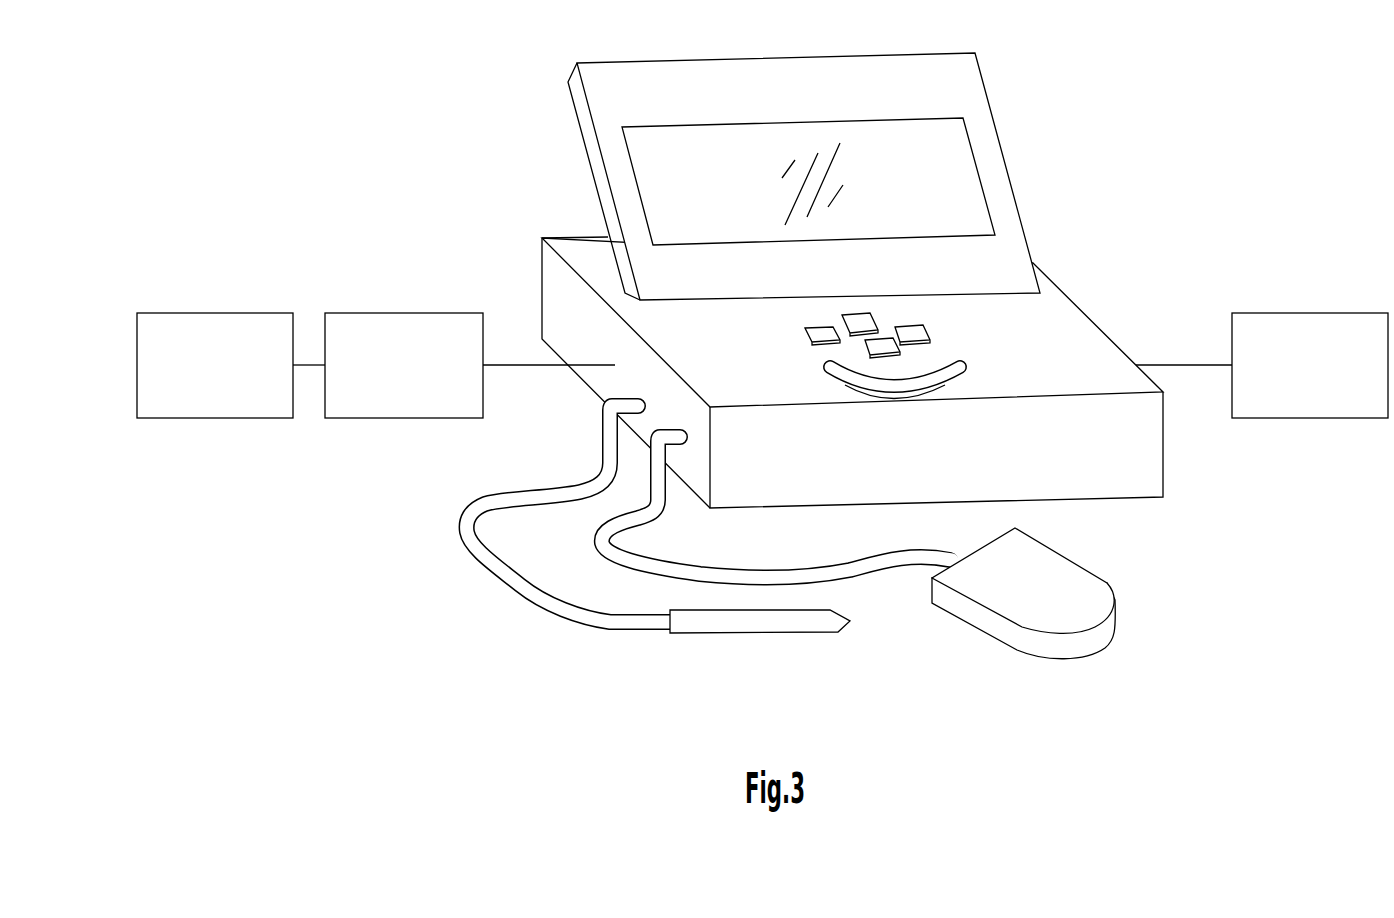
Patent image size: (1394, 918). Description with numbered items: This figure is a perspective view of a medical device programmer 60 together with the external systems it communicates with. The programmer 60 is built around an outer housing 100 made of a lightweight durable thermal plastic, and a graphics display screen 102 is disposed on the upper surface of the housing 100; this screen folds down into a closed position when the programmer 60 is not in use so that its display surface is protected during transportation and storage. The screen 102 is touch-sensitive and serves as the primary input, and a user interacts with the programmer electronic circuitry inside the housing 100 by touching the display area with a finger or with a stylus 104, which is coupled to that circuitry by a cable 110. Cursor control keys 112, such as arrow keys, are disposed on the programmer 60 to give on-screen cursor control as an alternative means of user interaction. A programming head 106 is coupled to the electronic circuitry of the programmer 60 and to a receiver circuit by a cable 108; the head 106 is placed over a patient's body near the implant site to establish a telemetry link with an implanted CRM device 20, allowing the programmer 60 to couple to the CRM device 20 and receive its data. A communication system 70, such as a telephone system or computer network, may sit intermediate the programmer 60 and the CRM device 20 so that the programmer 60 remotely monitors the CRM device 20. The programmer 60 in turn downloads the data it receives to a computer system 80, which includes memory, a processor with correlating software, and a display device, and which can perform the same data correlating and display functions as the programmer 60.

The CRM device 20 is at (272, 309).
The communication system 70 is at (462, 309).
The computer system 80 is at (1369, 309).
The medical device programmer 60 is at (867, 280).
The outer housing 100 is at (1163, 460).
The graphics display screen 102 is at (958, 183).
The stylus 104 is at (730, 637).
The programming head 106 is at (1093, 572).
The cable 108 is at (890, 568).
The cable 110 is at (520, 590).
The cursor control keys 112 is at (947, 350).